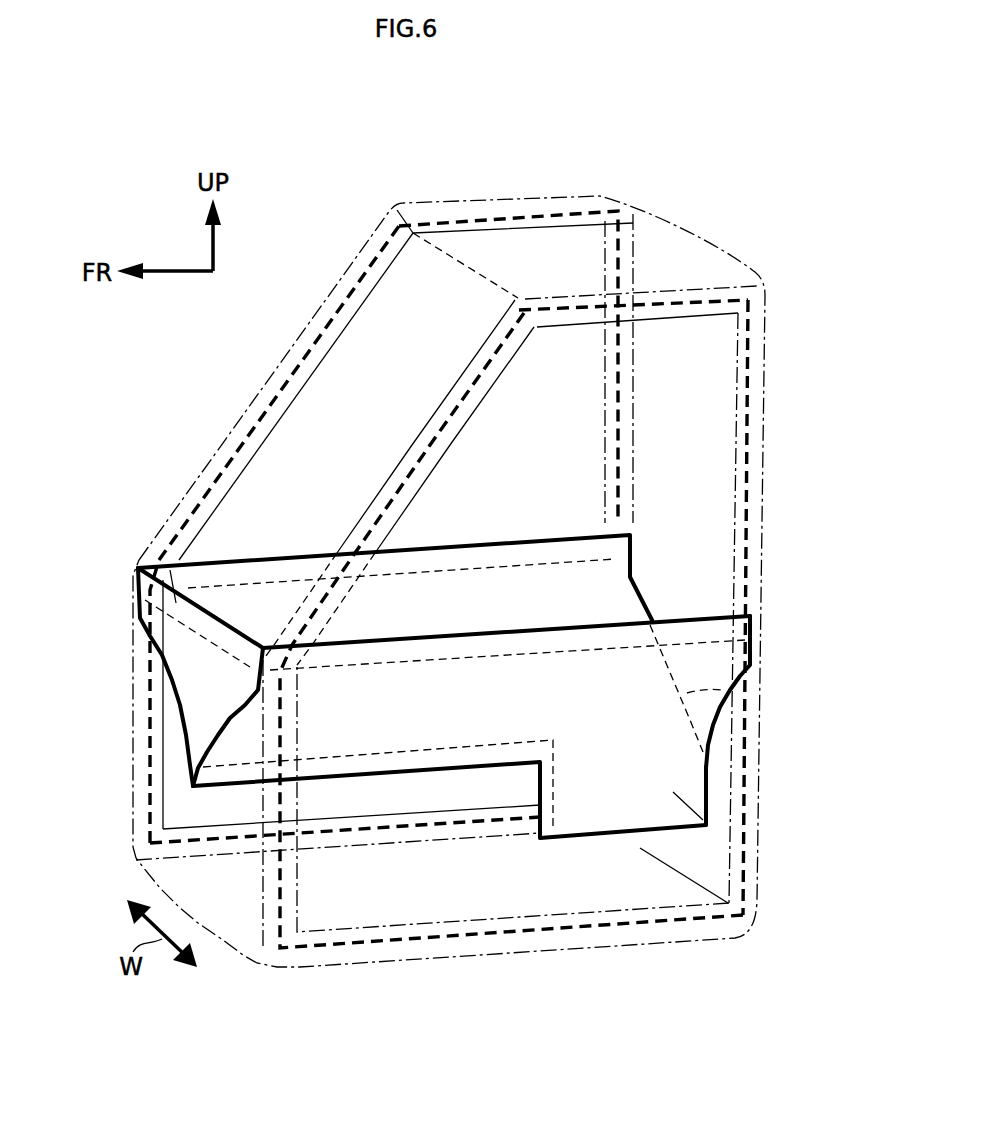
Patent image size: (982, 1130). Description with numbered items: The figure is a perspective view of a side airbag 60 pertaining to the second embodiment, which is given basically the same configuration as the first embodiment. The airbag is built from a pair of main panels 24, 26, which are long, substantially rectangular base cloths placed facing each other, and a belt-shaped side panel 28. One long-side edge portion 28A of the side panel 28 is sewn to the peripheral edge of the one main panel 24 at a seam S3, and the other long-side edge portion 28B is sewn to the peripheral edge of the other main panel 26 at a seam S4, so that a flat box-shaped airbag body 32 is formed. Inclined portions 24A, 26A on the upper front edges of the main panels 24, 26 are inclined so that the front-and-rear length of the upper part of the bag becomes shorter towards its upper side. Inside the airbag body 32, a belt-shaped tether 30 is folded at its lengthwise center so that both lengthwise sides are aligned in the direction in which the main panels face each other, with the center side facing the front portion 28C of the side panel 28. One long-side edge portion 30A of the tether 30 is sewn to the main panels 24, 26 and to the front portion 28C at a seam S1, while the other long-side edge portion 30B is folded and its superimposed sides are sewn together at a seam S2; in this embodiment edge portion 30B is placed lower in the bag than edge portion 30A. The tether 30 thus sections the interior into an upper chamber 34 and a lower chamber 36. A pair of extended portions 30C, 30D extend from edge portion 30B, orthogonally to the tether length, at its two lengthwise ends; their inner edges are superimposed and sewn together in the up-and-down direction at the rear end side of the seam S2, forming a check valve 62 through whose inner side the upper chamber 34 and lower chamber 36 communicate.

The main panel 24 is at (558, 954).
The inclined portion 24A is at (428, 420).
The main panel 26 is at (230, 420).
The inclined portion 26A is at (295, 335).
The side panel 28 is at (684, 226).
The long-side edge portion 28A is at (678, 318).
The long-side edge portion 28B is at (380, 285).
The front portion 28C is at (150, 562).
The tether 30 is at (455, 686).
The long-side edge portion 30A is at (300, 553).
The long-side edge portion 30B is at (483, 768).
The extended portion 30C is at (704, 822).
The extended portion 30D is at (738, 705).
The airbag body 32 is at (172, 444).
The upper chamber 34 is at (512, 456).
The lower chamber 36 is at (350, 898).
The side airbag 60 is at (341, 191).
The check valve 62 is at (714, 769).
The seam S1 is at (465, 655).
The seam S2 is at (383, 745).
The seam S3 is at (440, 957).
The seam S4 is at (517, 218).